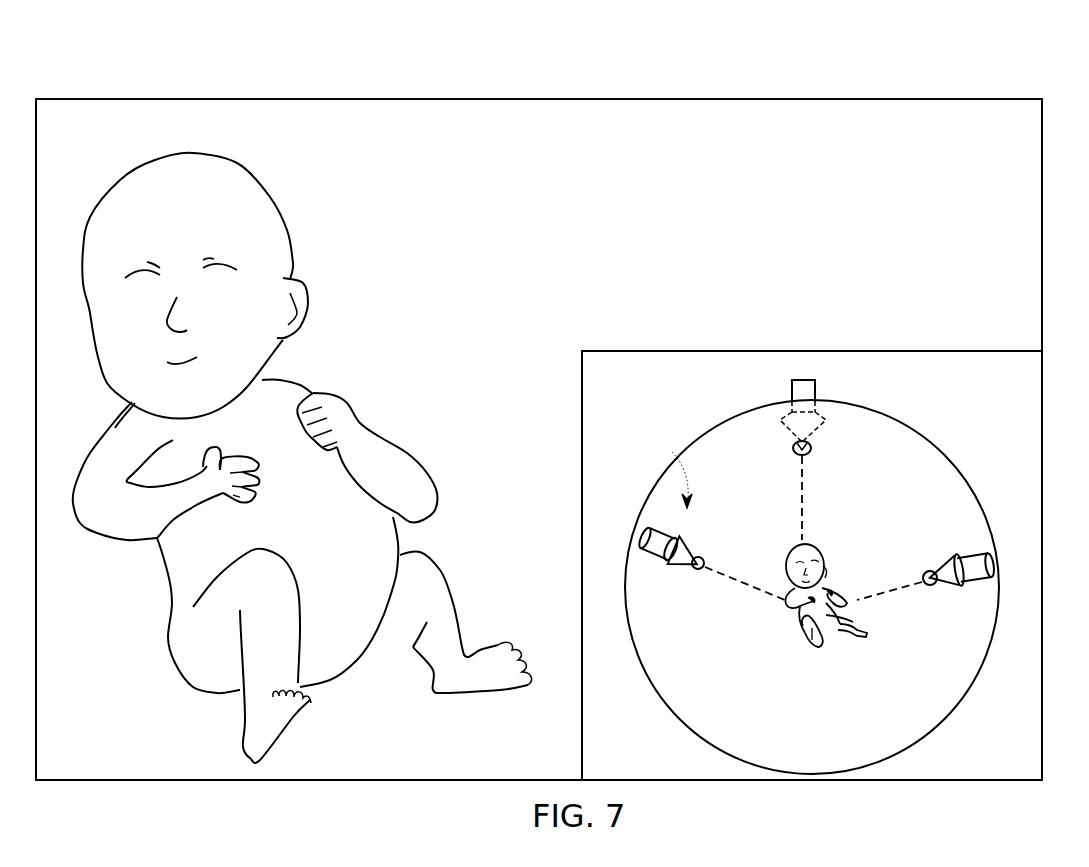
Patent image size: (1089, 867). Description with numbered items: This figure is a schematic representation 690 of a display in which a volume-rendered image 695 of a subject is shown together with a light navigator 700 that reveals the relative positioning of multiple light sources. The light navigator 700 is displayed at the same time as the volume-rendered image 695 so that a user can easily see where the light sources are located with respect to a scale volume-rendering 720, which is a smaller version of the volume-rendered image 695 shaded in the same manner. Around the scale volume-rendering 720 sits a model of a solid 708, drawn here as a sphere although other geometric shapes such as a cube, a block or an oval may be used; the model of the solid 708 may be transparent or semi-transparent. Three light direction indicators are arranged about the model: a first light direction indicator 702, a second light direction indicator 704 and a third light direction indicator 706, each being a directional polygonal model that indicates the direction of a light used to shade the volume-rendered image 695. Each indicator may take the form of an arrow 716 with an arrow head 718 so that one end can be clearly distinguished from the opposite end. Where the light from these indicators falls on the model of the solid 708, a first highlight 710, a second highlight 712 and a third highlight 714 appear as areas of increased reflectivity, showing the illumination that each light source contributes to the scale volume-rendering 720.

The system environment 690 is at (870, 85).
The volume-rendered image 695 is at (279, 206).
The light navigator 700 is at (879, 351).
The first light direction indicator 702 is at (655, 545).
The second light direction indicator 704 is at (980, 576).
The third light direction indicator 706 is at (815, 388).
The model of a solid 708 is at (946, 486).
The first highlight 710 is at (702, 555).
The second highlight 712 is at (930, 568).
The third highlight 714 is at (813, 449).
The arrow 716 is at (663, 473).
The arrow head 718 is at (683, 560).
The scale volume-rendering 720 is at (816, 541).